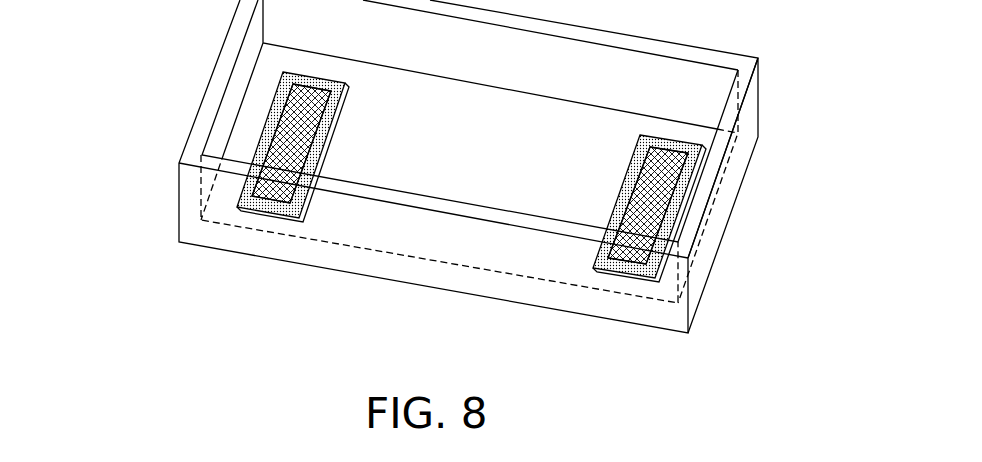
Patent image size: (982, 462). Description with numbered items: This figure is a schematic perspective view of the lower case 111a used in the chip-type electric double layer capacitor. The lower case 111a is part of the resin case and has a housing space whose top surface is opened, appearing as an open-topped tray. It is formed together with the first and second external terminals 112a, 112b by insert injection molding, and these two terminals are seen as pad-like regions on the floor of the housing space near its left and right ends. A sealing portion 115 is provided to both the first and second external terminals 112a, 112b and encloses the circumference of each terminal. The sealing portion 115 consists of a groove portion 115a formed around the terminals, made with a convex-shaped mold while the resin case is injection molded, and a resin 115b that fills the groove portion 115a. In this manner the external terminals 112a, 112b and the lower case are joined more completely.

The lower case 111a is at (755, 118).
The first external terminal 112a is at (223, 192).
The second external terminal 112b is at (685, 173).
The sealing portion 115 is at (449, 187).
The groove portion 115a is at (290, 96).
The resin 115b is at (264, 148).